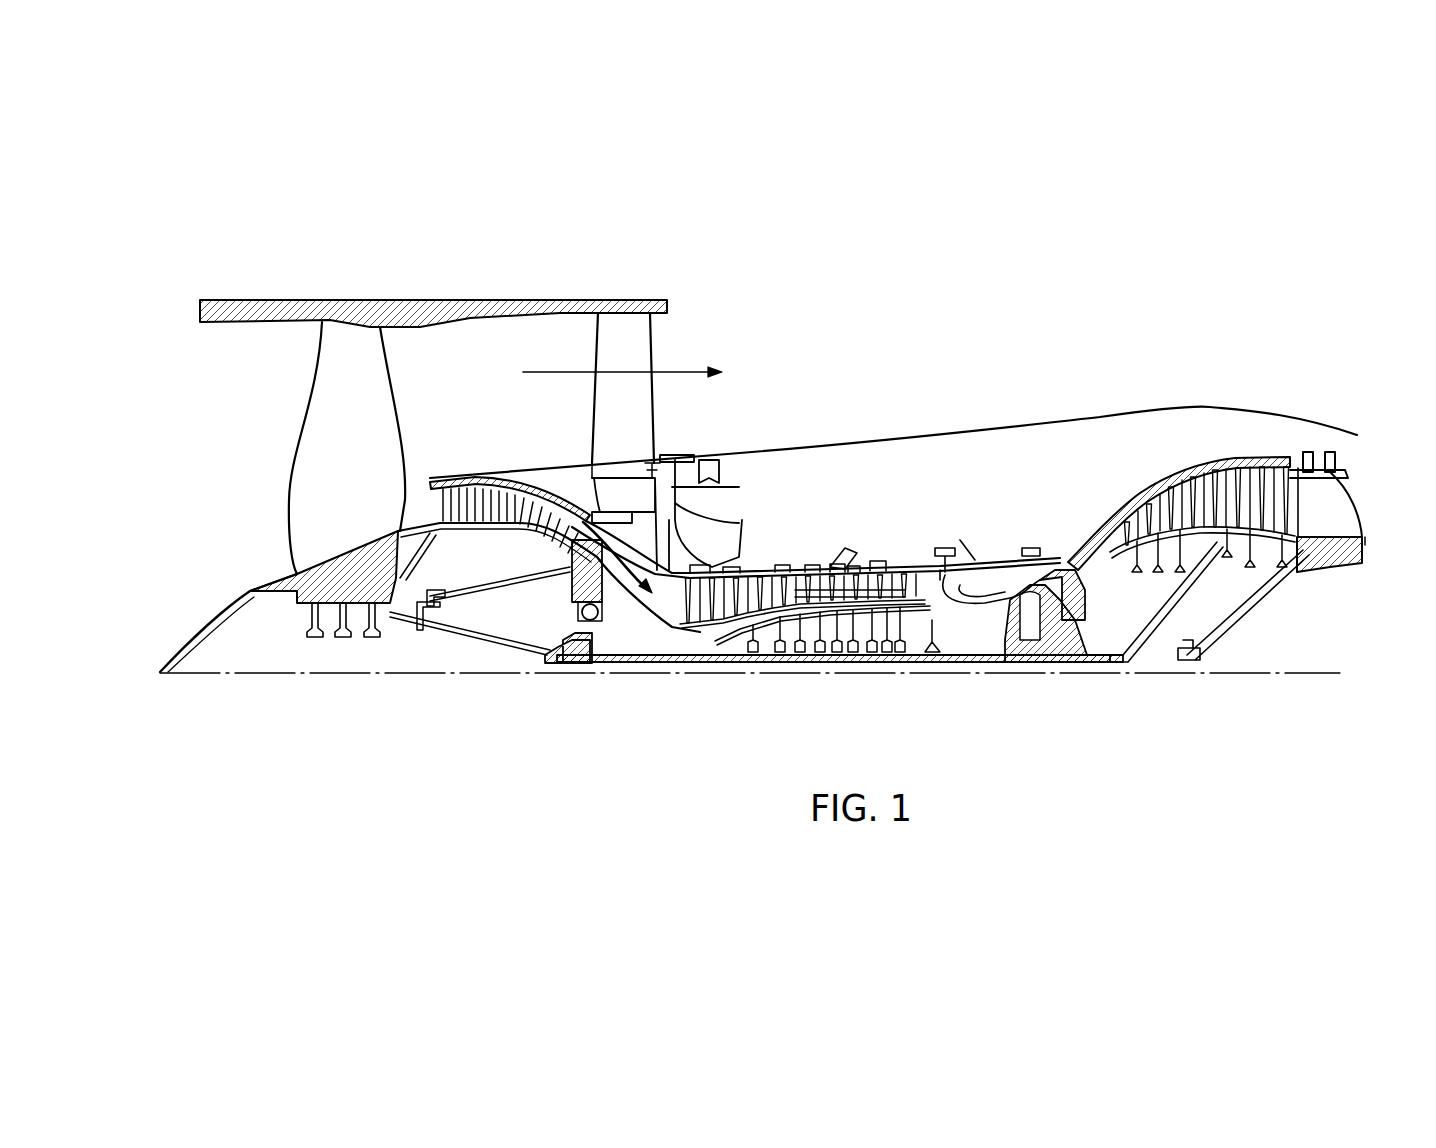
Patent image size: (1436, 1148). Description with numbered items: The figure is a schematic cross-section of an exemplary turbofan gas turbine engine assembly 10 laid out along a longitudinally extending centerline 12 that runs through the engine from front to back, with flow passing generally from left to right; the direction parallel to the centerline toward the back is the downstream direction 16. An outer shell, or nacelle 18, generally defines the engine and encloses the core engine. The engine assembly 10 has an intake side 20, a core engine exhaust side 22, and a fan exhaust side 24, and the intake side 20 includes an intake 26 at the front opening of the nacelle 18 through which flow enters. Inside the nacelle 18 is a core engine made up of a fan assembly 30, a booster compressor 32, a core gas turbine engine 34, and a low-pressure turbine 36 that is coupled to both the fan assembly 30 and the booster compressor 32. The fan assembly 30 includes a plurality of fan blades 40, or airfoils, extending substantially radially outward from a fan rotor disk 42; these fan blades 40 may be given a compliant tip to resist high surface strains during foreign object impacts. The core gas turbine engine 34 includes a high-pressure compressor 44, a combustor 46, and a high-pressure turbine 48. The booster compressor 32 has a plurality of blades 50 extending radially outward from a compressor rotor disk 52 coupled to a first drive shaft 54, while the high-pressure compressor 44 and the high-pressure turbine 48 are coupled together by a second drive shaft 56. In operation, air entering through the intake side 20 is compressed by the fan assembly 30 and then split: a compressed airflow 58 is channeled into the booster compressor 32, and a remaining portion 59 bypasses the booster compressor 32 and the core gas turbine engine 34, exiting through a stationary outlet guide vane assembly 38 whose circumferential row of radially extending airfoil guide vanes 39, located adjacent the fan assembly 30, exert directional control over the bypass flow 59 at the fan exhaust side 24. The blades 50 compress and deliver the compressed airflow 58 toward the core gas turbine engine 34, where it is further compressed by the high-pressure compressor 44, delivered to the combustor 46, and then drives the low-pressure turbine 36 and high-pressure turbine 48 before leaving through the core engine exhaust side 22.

The turbofan gas turbine engine assembly 10 is at (995, 248).
The centerline 12 is at (350, 676).
The downstream direction 16 is at (1413, 524).
The nacelle 18 is at (420, 302).
The intake side 20 is at (200, 358).
The core engine exhaust side 22 is at (1358, 497).
The fan exhaust side 24 is at (696, 334).
The intake 26 is at (257, 493).
The fan assembly 30 is at (272, 546).
The booster compressor 32 is at (495, 515).
The core gas turbine engine 34 is at (926, 468).
The low-pressure turbine 36 is at (1265, 460).
The outlet guide vane assembly 38 is at (660, 424).
The airfoil guide vanes 39 is at (638, 350).
The fan blades 40 is at (383, 400).
The fan rotor disk 42 is at (320, 593).
The high-pressure compressor 44 is at (717, 567).
The combustor 46 is at (985, 578).
The high-pressure turbine 48 is at (1020, 662).
The blades 50 is at (460, 490).
The compressor rotor disk 52 is at (455, 520).
The first drive shaft 54 is at (572, 663).
The second drive shaft 56 is at (957, 640).
The compressed airflow 58 is at (645, 540).
The remaining portion of the airflow 59 is at (560, 358).